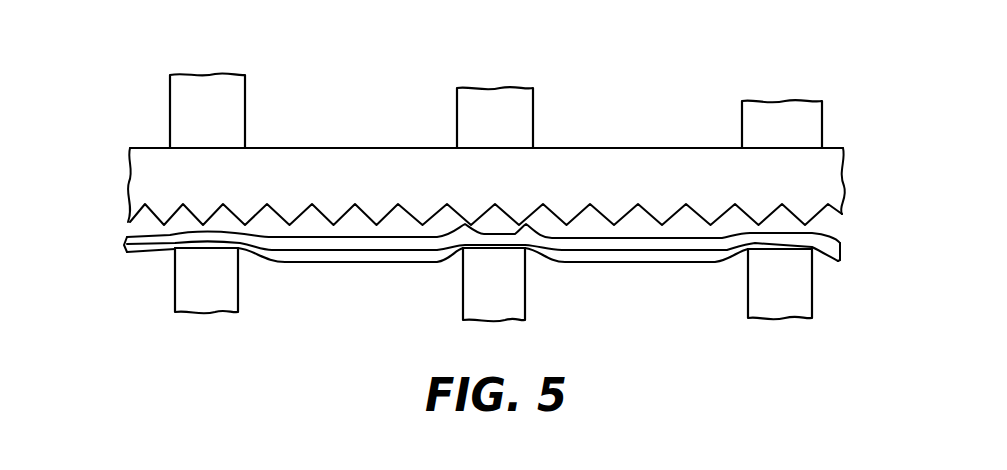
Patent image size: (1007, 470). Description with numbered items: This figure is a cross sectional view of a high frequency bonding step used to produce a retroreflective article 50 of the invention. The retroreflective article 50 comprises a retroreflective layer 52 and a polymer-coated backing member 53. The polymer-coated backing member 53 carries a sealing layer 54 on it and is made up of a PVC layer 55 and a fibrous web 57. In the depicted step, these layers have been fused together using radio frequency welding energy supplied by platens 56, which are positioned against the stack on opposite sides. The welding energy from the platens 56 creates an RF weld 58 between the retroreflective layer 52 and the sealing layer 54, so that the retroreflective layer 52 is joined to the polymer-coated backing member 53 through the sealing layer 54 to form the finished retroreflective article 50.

The retroreflective article 50 is at (604, 130).
The retroreflective layer 52 is at (667, 153).
The polymer-coated backing member 53 is at (847, 256).
The sealing layer 54 is at (618, 243).
The PVC layer 55 is at (675, 262).
The platens 56 is at (232, 98).
The fibrous web 57 is at (130, 245).
The RF weld 58 is at (466, 223).